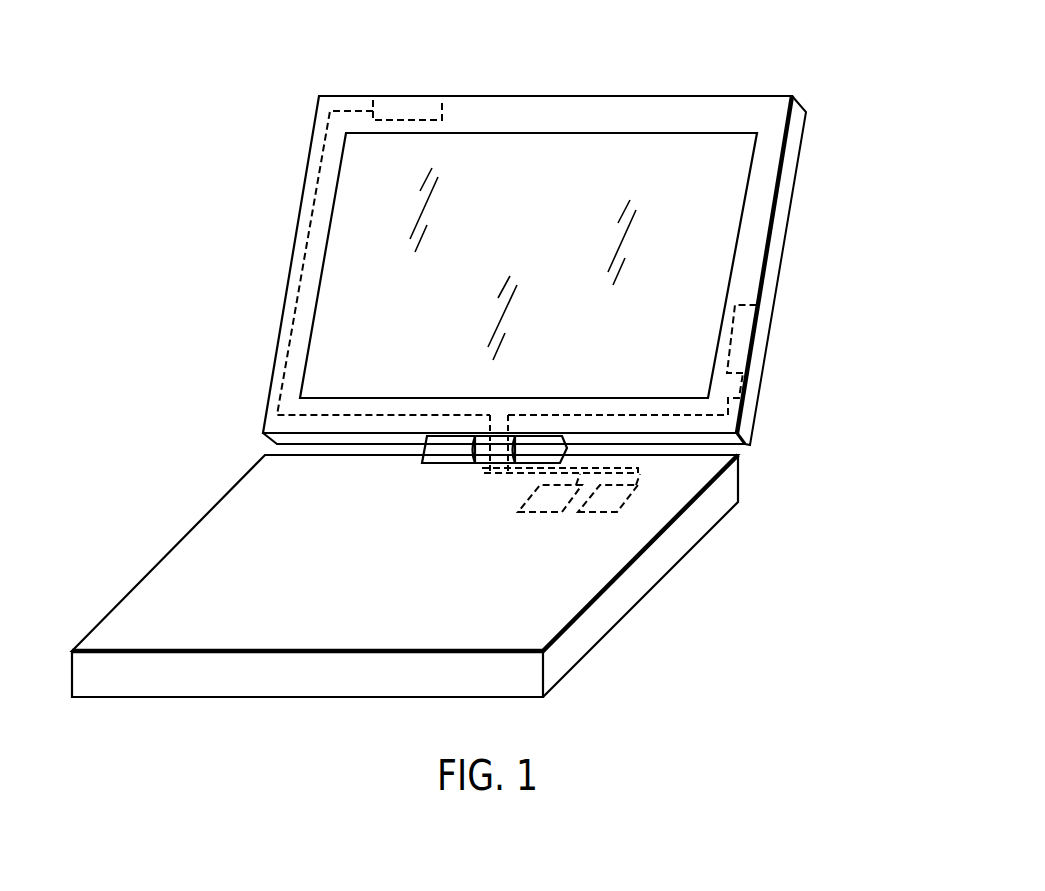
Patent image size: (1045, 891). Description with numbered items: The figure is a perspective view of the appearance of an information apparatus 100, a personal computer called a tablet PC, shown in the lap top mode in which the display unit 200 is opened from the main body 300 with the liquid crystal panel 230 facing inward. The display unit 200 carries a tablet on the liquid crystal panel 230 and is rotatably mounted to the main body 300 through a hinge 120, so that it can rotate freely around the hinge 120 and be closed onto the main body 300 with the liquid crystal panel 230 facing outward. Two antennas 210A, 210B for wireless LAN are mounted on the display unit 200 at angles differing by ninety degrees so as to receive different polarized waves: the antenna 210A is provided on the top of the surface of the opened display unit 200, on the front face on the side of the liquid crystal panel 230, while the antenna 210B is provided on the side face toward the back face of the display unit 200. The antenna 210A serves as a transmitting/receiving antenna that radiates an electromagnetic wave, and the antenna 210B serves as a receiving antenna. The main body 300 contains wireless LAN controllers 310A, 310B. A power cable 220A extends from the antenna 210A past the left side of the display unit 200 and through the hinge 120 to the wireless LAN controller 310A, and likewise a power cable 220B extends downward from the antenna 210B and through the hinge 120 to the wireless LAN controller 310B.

The electronic apparatus (notebook computer) 100 is at (463, 350).
The hinge 120 is at (495, 460).
The display unit 200 is at (507, 243).
The antenna 210A is at (413, 97).
The antenna 210B is at (747, 320).
The power cable 220A is at (320, 160).
The power cable 220B is at (740, 398).
The liquid crystal panel 230 is at (728, 190).
The main body 300 is at (418, 576).
The wireless LAN controller 310A is at (553, 500).
The wireless LAN controller 310B is at (617, 498).